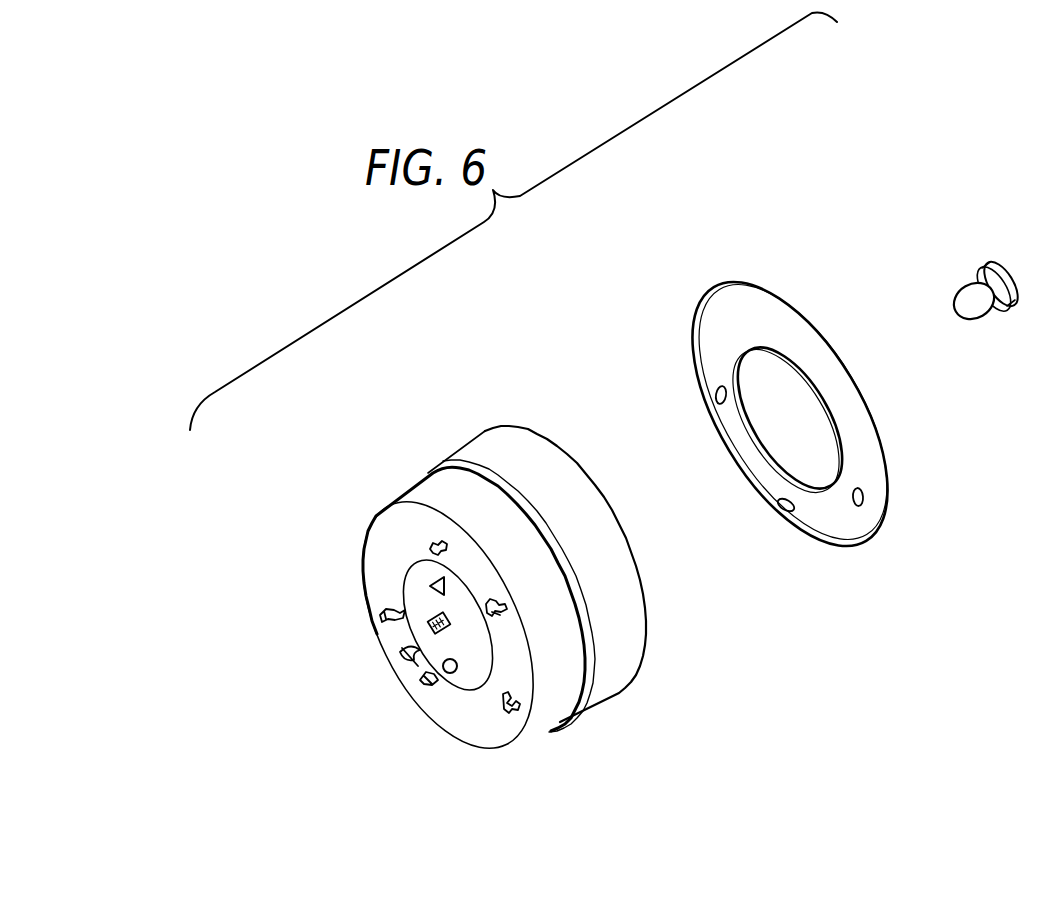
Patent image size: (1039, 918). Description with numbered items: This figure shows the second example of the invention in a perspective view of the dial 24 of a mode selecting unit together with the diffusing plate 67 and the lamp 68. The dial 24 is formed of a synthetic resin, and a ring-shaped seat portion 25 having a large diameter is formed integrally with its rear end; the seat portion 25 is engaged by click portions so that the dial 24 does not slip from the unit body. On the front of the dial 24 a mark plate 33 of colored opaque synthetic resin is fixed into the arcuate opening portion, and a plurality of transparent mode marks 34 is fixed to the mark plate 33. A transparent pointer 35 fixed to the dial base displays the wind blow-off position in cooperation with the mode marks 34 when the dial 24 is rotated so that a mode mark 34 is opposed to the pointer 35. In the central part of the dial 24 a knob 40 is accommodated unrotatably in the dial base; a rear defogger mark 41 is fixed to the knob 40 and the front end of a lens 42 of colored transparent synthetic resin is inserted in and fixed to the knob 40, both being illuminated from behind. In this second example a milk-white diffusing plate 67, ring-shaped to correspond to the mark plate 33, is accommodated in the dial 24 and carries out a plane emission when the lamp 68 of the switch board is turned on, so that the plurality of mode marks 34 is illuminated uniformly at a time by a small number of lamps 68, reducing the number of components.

The dial 24 is at (405, 497).
The seat portion 25 is at (498, 470).
The mark plate 33 is at (370, 528).
The mode marks 34 is at (440, 538).
The pointer 35 is at (445, 582).
The knob 40 is at (412, 584).
The rear defogger mark 41 is at (450, 627).
The lens 42 is at (452, 673).
The diffusing plate 67 is at (738, 280).
The lamp 68 is at (962, 285).